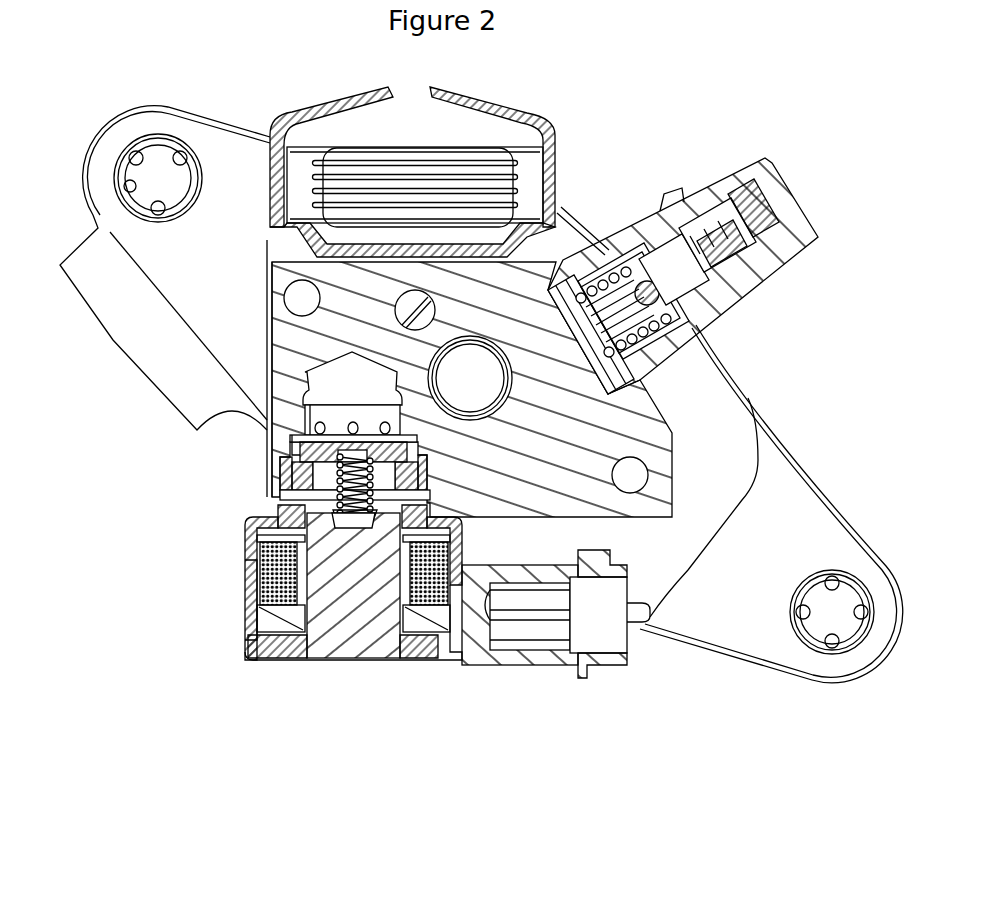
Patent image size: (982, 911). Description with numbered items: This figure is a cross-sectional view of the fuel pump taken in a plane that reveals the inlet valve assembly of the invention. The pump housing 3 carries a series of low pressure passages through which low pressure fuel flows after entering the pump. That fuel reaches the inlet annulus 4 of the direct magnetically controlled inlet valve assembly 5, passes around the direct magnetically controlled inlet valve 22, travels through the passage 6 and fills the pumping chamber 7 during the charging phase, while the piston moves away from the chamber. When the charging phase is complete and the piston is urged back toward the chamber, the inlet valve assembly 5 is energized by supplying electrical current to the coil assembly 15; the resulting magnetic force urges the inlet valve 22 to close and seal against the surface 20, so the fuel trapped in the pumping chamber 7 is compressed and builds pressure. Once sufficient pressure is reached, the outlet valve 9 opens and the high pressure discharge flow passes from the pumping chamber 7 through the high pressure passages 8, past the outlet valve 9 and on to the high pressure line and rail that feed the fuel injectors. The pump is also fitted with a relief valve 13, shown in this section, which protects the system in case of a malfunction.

The pump housing 3 is at (278, 263).
The inlet annulus 4 is at (424, 480).
The direct magnetically controlled inlet valve assembly 5 is at (208, 559).
The passage 6 is at (348, 378).
The pumping chamber 7 is at (478, 370).
The high pressure passages 8 is at (553, 347).
The outlet valve 9 is at (710, 223).
The relief valve 13 is at (660, 294).
The coil assembly 15 is at (243, 604).
The surface 20 is at (319, 468).
The direct magnetically controlled inlet valve 22 is at (300, 452).